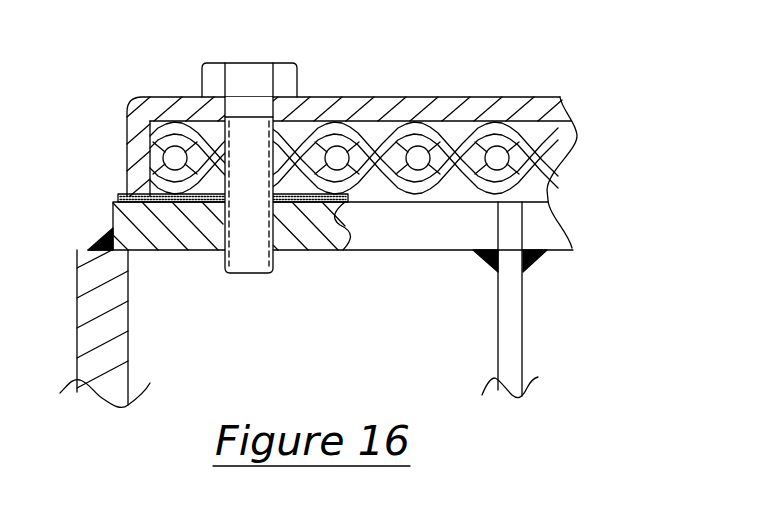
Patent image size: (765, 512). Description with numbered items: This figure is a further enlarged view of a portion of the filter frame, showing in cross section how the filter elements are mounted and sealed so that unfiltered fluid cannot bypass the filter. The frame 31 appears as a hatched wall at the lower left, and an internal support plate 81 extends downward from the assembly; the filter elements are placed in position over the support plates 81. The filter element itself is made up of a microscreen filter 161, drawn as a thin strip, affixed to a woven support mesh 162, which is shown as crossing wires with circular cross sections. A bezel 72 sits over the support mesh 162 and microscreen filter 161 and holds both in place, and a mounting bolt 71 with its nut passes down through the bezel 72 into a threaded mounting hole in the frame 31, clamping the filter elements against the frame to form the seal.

The mounting bolt 71 is at (253, 74).
The bezel 72 is at (523, 107).
The support mesh 162 is at (402, 137).
The microscreen filter 161 is at (143, 187).
The frame 31 is at (85, 308).
The support plate 81 is at (513, 342).